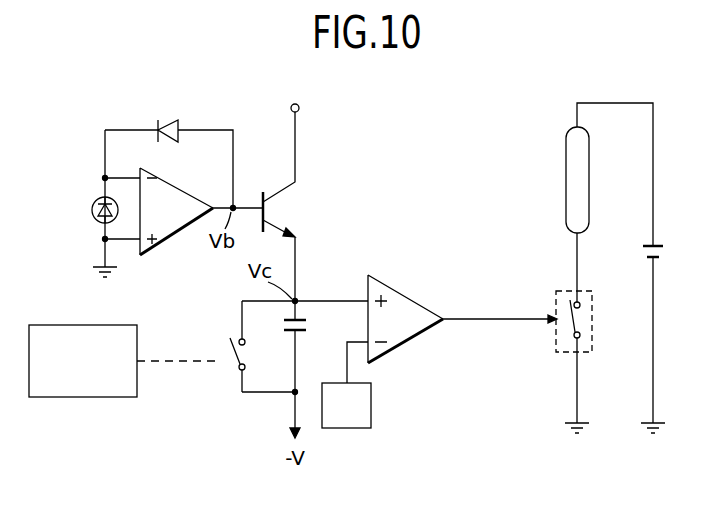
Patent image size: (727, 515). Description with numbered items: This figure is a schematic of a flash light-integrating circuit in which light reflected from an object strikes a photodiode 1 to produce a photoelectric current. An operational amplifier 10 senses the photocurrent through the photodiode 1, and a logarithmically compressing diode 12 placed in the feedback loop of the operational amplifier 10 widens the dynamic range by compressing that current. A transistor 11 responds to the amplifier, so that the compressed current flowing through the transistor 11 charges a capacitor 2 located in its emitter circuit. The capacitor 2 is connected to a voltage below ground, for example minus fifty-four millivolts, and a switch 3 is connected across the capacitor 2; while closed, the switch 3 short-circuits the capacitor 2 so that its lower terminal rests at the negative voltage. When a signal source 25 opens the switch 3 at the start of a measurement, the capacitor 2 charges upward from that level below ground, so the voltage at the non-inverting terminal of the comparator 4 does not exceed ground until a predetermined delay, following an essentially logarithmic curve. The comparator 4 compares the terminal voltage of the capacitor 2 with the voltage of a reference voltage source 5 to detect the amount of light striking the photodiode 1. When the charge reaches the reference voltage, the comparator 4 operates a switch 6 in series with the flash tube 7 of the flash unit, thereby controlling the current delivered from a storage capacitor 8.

The photodiode 1 is at (92, 208).
The capacitor 2 is at (309, 324).
The switch 3 is at (230, 346).
The comparator 4 is at (402, 297).
The reference voltage source 5 is at (371, 403).
The switch 6 is at (553, 333).
The flash tube 7 is at (566, 178).
The storage capacitor 8 is at (663, 251).
The operational amplifier 10 is at (182, 195).
The transistor 11 is at (278, 210).
The logarithmically compressing diode 12 is at (168, 122).
The source 25 is at (97, 325).